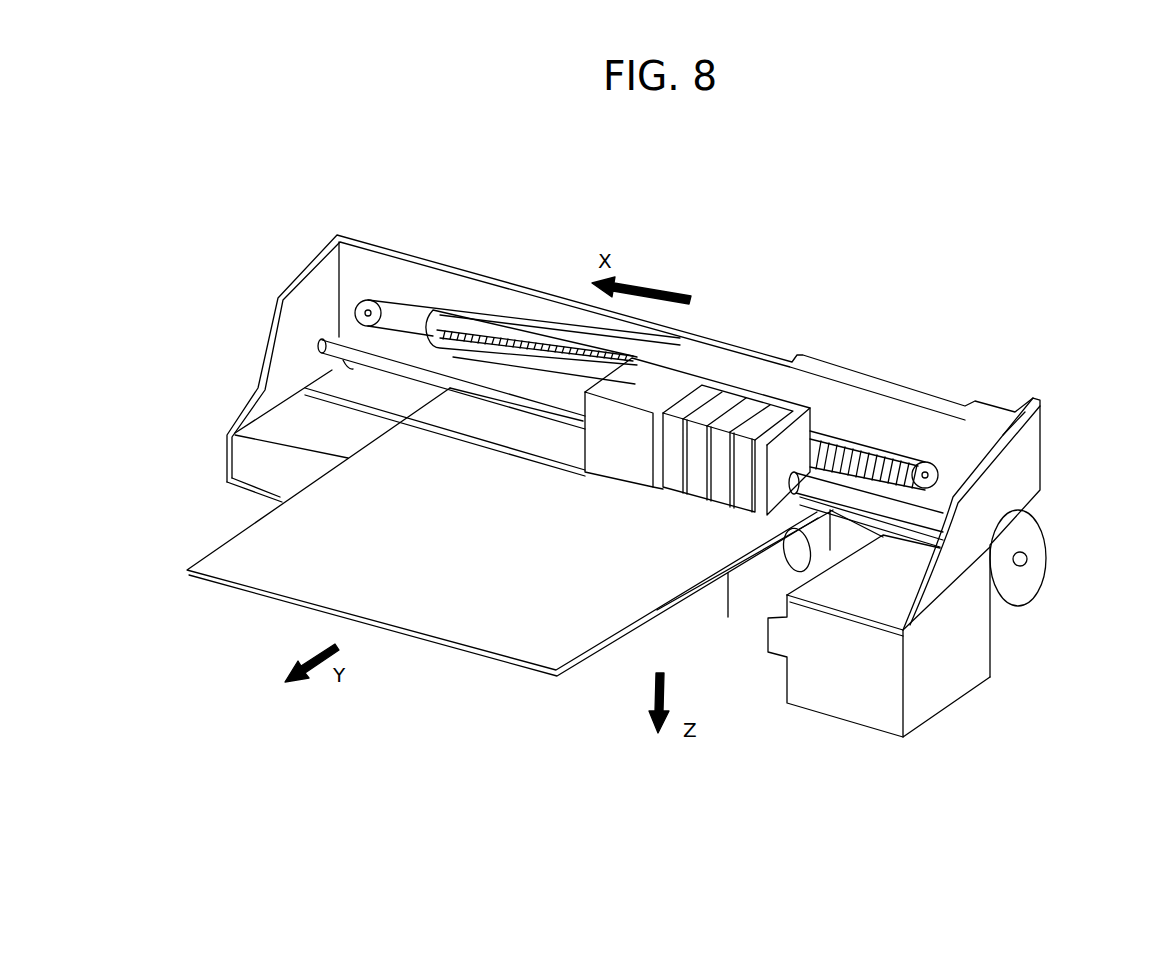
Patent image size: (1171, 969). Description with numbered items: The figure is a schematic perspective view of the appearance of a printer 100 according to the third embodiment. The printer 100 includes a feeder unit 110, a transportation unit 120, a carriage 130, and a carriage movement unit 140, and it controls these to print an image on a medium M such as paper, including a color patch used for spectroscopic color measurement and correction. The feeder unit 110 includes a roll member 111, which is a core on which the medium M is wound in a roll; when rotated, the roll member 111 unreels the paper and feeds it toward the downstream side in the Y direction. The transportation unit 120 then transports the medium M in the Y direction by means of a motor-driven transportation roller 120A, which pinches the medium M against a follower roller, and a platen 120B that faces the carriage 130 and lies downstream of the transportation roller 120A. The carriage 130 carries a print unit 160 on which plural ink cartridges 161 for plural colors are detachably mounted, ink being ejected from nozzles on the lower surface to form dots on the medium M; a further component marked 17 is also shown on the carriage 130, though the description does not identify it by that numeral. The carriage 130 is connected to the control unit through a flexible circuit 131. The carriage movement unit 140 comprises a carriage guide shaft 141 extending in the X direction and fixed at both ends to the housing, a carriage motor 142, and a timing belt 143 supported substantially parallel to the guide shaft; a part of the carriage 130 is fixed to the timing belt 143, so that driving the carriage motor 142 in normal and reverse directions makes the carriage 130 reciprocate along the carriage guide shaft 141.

The printer 100 is at (866, 212).
The feeder unit 110 is at (1080, 534).
The roll member 111 is at (1032, 574).
The transportation unit 120 is at (860, 570).
The transportation roller 120A is at (800, 567).
The platen 120B is at (305, 432).
The carriage 130 is at (682, 357).
The flexible circuit 131 is at (483, 318).
The carriage movement unit 140 is at (938, 445).
The carriage guide shaft 141 is at (857, 497).
The carriage motor 142 is at (907, 460).
The timing belt 143 is at (398, 300).
The print unit 160 is at (707, 483).
The ink cartridges 161 is at (780, 408).
The carriage 17 is at (615, 453).
The medium M is at (313, 575).